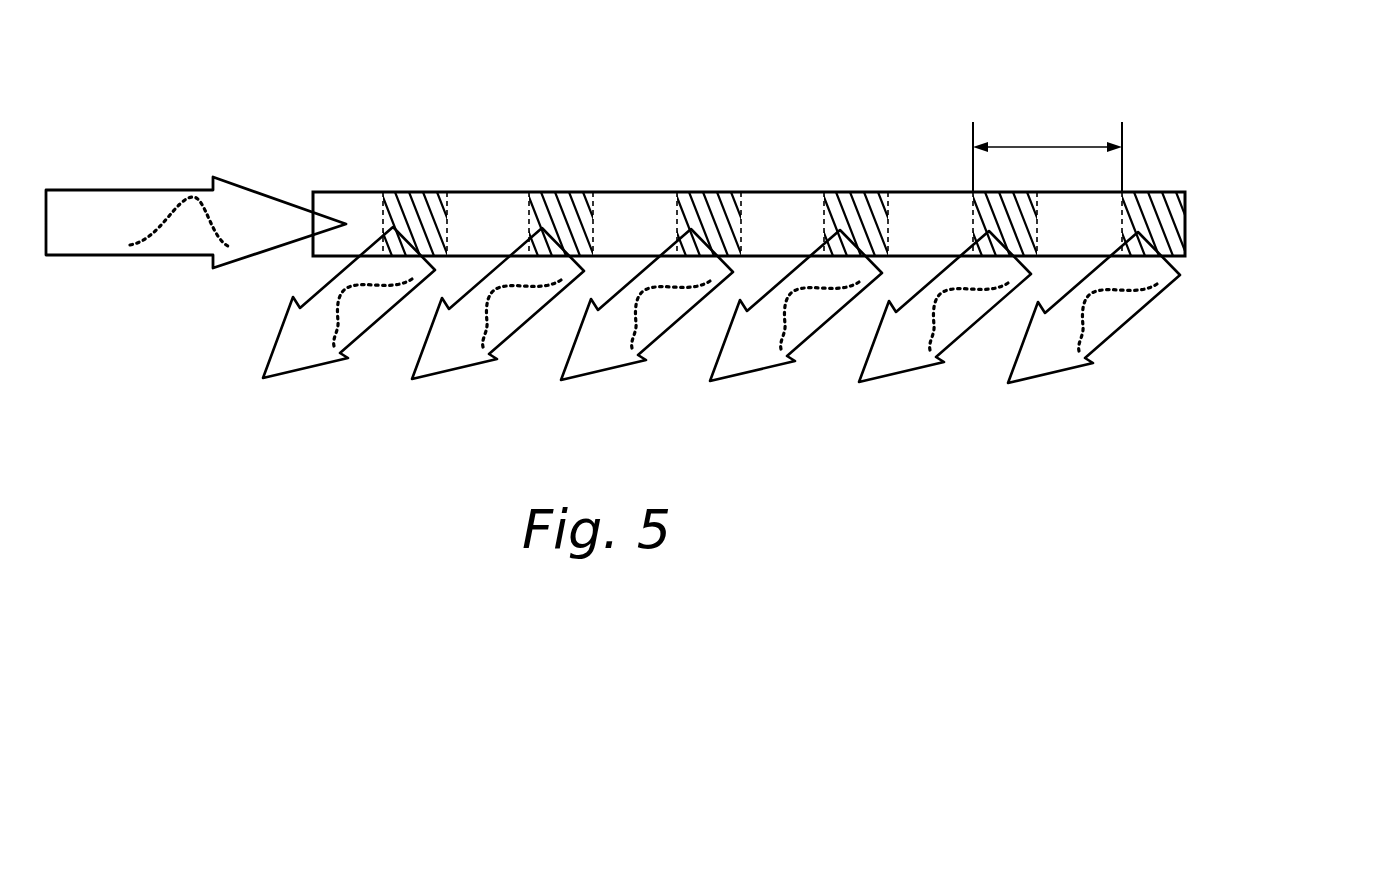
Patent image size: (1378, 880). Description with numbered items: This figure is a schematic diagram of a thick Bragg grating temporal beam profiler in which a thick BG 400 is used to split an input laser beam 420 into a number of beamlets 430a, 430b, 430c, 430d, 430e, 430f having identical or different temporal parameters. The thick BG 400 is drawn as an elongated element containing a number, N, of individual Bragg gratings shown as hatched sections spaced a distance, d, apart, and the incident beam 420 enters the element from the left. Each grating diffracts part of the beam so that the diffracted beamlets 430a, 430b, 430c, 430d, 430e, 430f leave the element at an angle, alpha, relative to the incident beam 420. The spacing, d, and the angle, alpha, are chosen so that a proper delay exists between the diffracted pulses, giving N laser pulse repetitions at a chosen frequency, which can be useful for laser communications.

The thick BG 400 is at (1218, 168).
The input laser beam 420 is at (88, 189).
The beamlet 430a is at (308, 363).
The beamlet 430b is at (455, 373).
The beamlet 430c is at (602, 375).
The beamlet 430d is at (747, 380).
The beamlet 430e is at (887, 380).
The beamlet 430f is at (1042, 388).